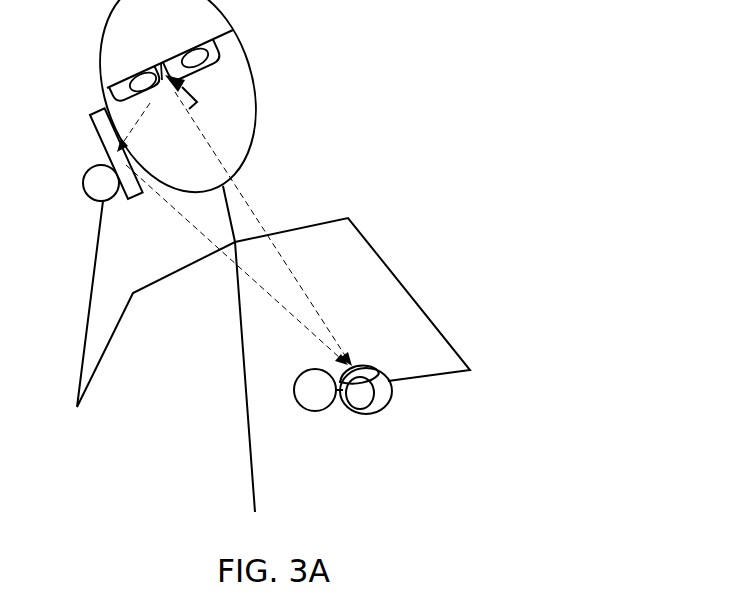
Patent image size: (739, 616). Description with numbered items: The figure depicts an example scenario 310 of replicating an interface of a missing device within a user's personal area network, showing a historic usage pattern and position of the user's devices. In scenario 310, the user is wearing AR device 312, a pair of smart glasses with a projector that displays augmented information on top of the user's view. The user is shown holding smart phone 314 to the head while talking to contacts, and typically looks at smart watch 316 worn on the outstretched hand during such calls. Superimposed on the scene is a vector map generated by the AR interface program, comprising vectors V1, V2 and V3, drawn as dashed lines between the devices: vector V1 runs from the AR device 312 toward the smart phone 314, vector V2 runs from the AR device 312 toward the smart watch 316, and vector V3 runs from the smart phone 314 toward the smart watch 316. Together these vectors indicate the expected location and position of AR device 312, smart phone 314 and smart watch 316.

The scenario 310 is at (500, 122).
The AR device 312 is at (110, 86).
The smart phone 314 is at (98, 134).
The smart watch 316 is at (392, 399).
The vector V1 is at (141, 127).
The vector V2 is at (263, 229).
The vector V3 is at (237, 265).